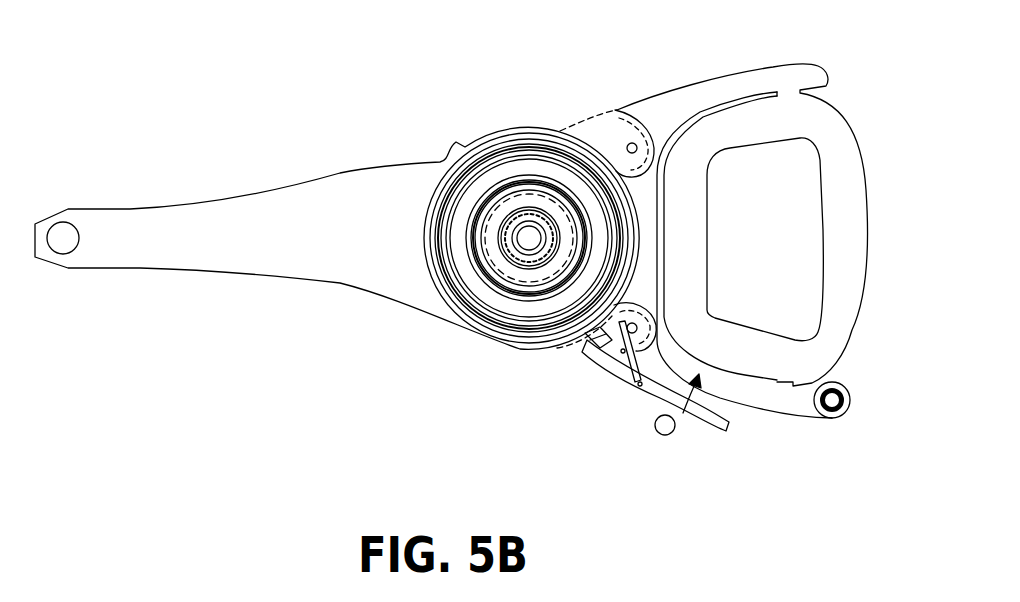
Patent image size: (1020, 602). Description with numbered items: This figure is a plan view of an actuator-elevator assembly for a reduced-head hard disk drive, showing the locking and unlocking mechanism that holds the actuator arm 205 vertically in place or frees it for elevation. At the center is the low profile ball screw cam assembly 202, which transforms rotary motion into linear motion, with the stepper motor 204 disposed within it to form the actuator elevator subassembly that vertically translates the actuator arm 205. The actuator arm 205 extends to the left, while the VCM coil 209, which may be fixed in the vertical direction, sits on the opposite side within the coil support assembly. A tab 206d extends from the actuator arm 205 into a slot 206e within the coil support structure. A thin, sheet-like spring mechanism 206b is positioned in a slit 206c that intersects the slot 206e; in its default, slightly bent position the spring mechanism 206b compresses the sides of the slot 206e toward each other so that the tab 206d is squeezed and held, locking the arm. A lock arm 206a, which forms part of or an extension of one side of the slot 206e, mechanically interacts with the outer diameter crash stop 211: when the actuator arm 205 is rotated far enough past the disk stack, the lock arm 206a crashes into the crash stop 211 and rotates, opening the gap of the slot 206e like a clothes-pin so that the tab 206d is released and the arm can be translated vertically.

The low profile ball screw cam assembly 202 is at (490, 178).
The stepper motor 204 is at (528, 198).
The actuator arm 205 is at (210, 211).
The VCM coil 209 is at (847, 181).
The lock arm 206a is at (712, 426).
The spring mechanism 206b is at (623, 372).
The slit 206c is at (623, 350).
The tab 206d is at (586, 346).
The slot 206e is at (634, 318).
The outer diameter crash stop 211 is at (667, 435).